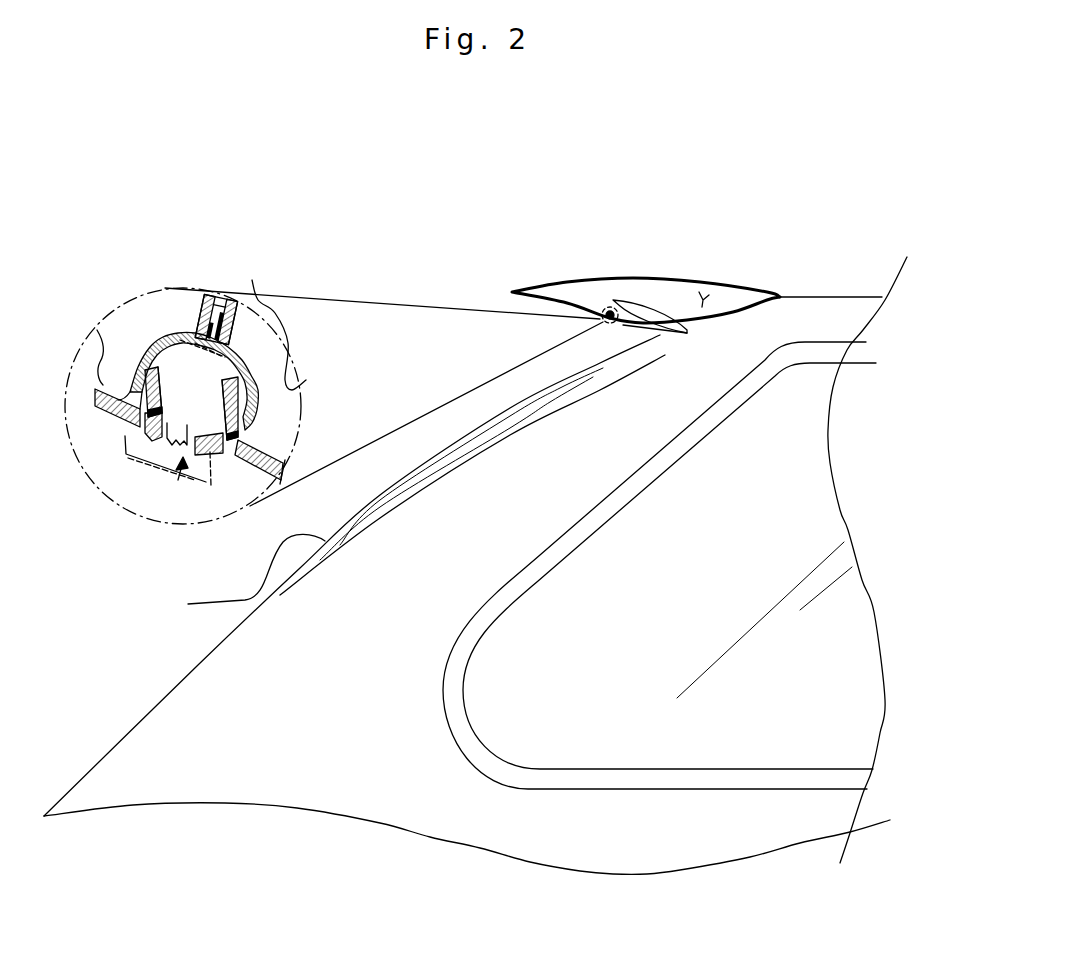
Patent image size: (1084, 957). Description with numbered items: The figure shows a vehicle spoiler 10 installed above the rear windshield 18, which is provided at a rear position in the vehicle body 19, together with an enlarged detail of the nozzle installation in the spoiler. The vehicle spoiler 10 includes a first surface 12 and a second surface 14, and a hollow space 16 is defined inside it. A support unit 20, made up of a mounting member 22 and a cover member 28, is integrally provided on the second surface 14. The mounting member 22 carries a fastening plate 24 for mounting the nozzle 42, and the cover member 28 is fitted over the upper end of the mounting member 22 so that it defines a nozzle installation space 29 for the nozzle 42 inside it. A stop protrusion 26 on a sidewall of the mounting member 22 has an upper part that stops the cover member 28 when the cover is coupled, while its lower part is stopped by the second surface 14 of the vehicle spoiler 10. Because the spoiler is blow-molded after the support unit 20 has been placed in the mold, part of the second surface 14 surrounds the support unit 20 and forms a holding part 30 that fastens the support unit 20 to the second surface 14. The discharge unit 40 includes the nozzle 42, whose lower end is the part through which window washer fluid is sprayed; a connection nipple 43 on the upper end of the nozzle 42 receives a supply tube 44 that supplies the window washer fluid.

The vehicle spoiler 10 is at (686, 277).
The first surface 12 is at (570, 284).
The second surface 14 is at (92, 388).
The hollow space 16 is at (707, 295).
The rear windshield 18 is at (354, 575).
The vehicle body 19 is at (318, 781).
The support unit 20 is at (97, 255).
The mounting member 22 is at (155, 342).
The fastening plate 24 is at (125, 438).
The stop protrusion 26 is at (133, 410).
The cover member 28 is at (174, 334).
The nozzle installation space 29 is at (248, 342).
The holding part 30 is at (273, 377).
The discharge unit 40 is at (178, 482).
The nozzle 42 is at (165, 445).
The connection nipple 43 is at (237, 296).
The supply tube 44 is at (206, 295).